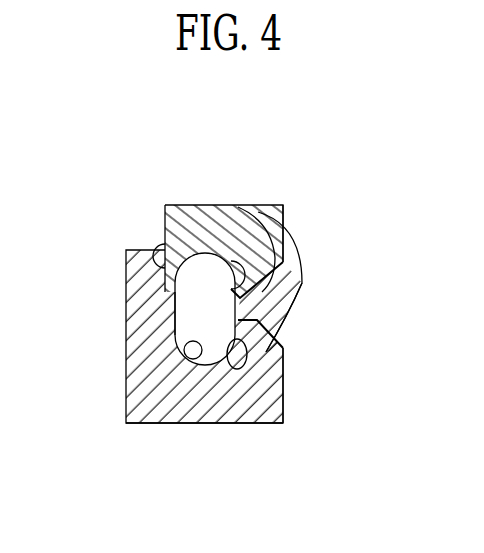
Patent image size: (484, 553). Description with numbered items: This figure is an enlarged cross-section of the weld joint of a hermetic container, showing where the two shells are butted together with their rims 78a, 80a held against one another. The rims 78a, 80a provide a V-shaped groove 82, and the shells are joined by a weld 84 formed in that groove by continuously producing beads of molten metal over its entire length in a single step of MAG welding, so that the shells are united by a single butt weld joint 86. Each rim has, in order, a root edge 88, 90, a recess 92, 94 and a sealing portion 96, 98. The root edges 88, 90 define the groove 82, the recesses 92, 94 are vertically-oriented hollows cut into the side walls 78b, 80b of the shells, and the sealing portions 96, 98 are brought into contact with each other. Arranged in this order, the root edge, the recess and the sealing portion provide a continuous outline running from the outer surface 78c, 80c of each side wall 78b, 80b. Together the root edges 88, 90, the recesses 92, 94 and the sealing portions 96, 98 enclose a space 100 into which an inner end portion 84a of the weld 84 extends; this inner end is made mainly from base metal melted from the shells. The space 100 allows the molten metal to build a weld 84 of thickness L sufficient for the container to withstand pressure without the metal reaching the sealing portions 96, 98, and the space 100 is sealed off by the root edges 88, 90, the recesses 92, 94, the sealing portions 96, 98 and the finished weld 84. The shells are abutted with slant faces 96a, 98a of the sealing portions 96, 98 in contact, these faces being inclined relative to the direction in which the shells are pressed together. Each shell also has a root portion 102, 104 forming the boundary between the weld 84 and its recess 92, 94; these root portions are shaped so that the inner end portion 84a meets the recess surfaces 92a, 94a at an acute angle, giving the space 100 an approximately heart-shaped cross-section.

The rim 78a is at (300, 248).
The side wall 78b is at (163, 210).
The outer surface 78c is at (300, 213).
The rim 80a is at (270, 376).
The side wall 80b is at (126, 365).
The outer surface 80c is at (285, 413).
The V-shaped groove 82 is at (277, 310).
The weld 84 is at (276, 205).
The inner end portion 84a is at (175, 313).
The butt weld joint 86 is at (335, 220).
The root edge 88 is at (293, 288).
The root edge 90 is at (268, 333).
The recess 92 is at (190, 203).
The recess surface 92a is at (216, 205).
The recess 94 is at (206, 422).
The recess surface 94a is at (185, 360).
The sealing portion 96 is at (176, 203).
The slant face 96a is at (158, 258).
The sealing portion 98 is at (160, 283).
The slant face 98a is at (160, 242).
The space 100 is at (227, 301).
The root portion 102 is at (257, 204).
The root portion 104 is at (242, 421).
The thickness L is at (297, 323).